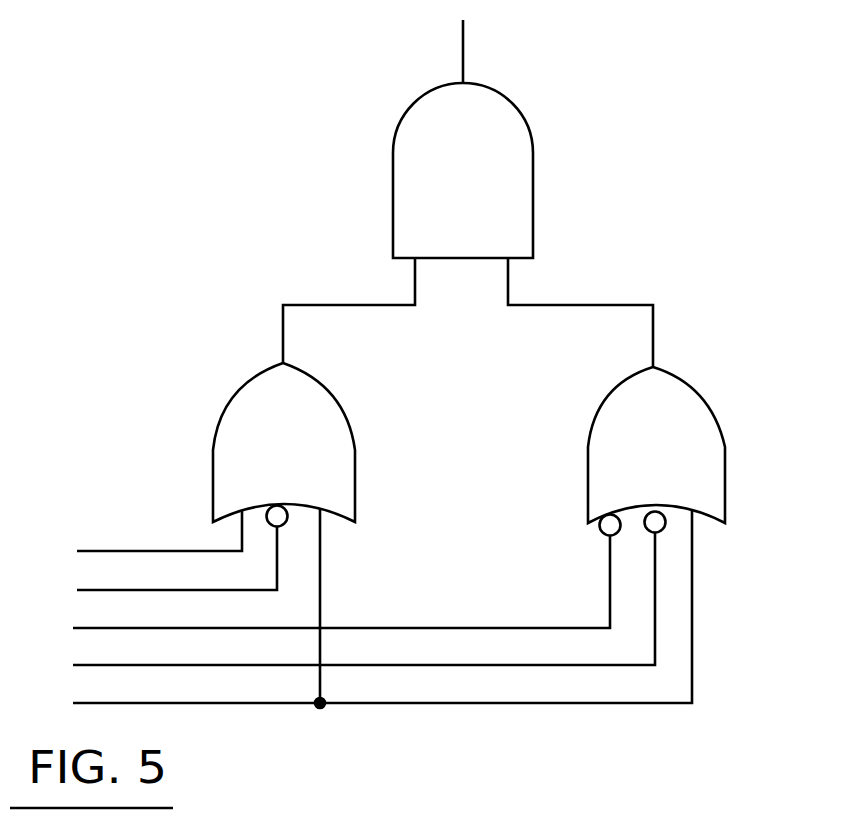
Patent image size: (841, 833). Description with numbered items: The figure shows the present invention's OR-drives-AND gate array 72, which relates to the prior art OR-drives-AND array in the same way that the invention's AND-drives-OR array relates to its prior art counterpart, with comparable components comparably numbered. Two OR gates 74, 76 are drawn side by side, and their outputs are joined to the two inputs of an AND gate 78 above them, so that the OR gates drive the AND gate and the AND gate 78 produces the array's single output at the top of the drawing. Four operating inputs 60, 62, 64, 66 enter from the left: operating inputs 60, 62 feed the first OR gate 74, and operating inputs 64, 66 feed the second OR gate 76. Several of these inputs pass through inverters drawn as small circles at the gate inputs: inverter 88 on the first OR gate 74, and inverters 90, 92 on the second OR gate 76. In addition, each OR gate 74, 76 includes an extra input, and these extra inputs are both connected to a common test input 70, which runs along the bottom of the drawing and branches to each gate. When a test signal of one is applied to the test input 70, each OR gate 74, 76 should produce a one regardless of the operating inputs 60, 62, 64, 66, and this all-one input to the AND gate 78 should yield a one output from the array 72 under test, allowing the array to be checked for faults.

The operating input 60 is at (137, 537).
The operating input 62 is at (155, 564).
The operating input 64 is at (321, 587).
The operating input 66 is at (344, 604).
The test input 70 is at (362, 611).
The OR-drives-AND gate array 72 is at (652, 232).
The OR gate 74 is at (293, 462).
The OR gate 76 is at (671, 452).
The AND gate 78 is at (479, 208).
The inverter 88 is at (286, 526).
The inverter 90 is at (601, 528).
The inverter 92 is at (648, 531).